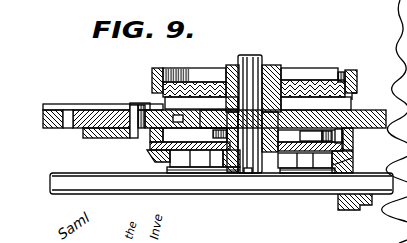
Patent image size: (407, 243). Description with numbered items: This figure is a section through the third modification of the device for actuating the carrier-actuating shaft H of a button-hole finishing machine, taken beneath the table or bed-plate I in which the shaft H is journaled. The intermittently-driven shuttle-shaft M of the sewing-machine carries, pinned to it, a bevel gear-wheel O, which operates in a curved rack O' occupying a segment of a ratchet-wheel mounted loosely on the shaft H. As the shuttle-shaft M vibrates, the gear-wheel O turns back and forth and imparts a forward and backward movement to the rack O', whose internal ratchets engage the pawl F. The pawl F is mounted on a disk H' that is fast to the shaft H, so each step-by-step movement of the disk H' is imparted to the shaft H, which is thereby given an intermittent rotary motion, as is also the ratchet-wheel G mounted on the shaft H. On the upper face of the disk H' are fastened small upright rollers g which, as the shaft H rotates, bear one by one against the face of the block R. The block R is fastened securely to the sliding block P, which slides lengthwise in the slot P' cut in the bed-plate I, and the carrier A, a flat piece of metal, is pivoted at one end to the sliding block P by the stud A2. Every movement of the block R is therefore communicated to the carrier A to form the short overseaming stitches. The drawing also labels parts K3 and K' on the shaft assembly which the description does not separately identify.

The carrier A is at (101, 104).
The sliding block P is at (131, 99).
The slot P' is at (60, 132).
The block R is at (87, 132).
The stud A2 is at (134, 130).
The hub with arms K3 is at (354, 71).
The plate K' is at (293, 111).
The carrier-actuating shaft H is at (250, 114).
The bed-plate I is at (212, 132).
The pawl F is at (148, 158).
The disk H' is at (207, 188).
The upright rollers g is at (350, 139).
The curved rack O' is at (331, 161).
The ratchet-wheel G is at (281, 174).
The shuttle-shaft M is at (222, 185).
The bevel gear-wheel O is at (356, 207).